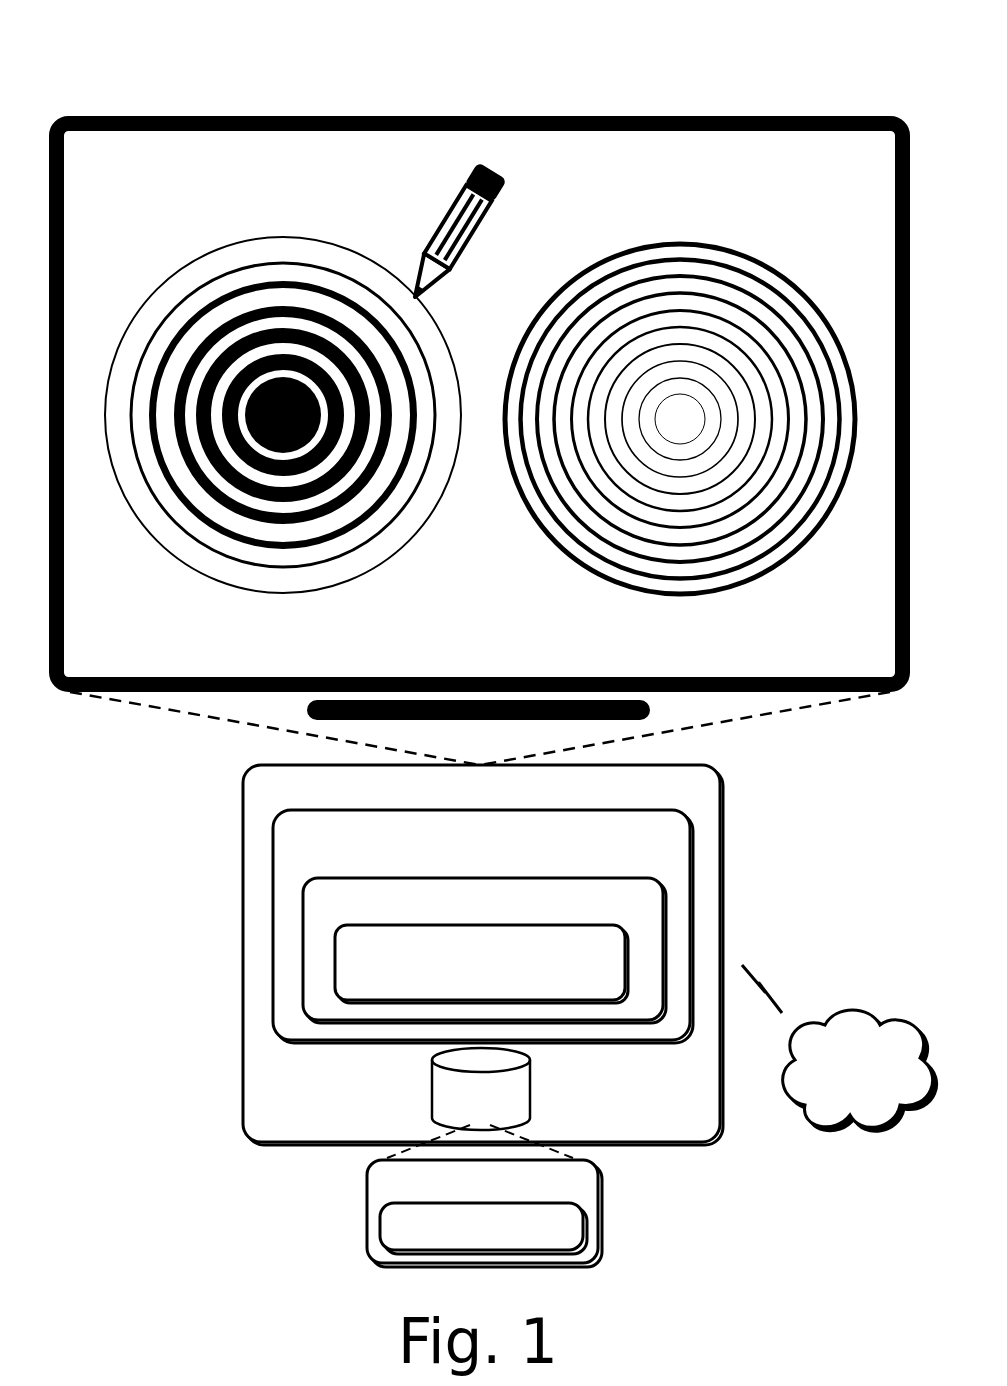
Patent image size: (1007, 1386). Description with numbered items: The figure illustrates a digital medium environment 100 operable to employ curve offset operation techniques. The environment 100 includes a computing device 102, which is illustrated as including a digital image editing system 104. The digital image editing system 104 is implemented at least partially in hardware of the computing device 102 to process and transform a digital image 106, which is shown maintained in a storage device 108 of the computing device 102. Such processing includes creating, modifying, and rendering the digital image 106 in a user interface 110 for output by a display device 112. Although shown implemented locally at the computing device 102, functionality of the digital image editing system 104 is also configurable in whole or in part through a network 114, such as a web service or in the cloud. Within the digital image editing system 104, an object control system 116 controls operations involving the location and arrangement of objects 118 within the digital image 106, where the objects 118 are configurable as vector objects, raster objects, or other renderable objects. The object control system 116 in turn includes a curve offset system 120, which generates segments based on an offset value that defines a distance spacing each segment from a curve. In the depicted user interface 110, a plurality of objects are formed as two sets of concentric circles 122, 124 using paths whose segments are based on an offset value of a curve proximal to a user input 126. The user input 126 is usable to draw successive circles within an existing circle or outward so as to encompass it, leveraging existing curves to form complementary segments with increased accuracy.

The digital medium environment 100 is at (172, 70).
The computing device 102 is at (600, 797).
The digital image editing system 104 is at (583, 872).
The digital image 106 is at (571, 1192).
The storage device 108 is at (462, 1106).
The user interface 110 is at (888, 667).
The display device 112 is at (557, 116).
The network 114 is at (873, 1098).
The object control system 116 is at (619, 914).
The object 118 is at (537, 1236).
The curve offset system 120 is at (544, 987).
The concentric circles 122 is at (203, 222).
The concentric circles 124 is at (750, 218).
The user input 126 is at (497, 175).